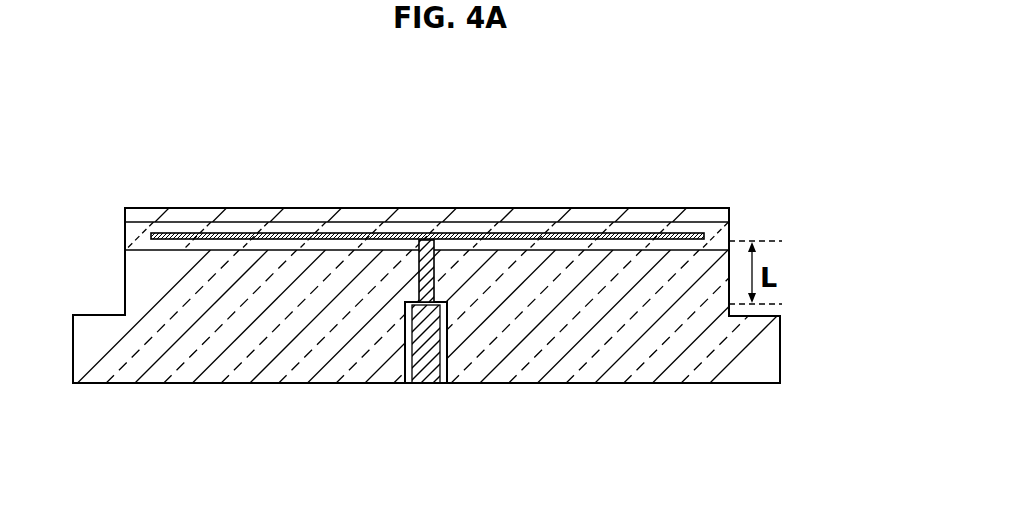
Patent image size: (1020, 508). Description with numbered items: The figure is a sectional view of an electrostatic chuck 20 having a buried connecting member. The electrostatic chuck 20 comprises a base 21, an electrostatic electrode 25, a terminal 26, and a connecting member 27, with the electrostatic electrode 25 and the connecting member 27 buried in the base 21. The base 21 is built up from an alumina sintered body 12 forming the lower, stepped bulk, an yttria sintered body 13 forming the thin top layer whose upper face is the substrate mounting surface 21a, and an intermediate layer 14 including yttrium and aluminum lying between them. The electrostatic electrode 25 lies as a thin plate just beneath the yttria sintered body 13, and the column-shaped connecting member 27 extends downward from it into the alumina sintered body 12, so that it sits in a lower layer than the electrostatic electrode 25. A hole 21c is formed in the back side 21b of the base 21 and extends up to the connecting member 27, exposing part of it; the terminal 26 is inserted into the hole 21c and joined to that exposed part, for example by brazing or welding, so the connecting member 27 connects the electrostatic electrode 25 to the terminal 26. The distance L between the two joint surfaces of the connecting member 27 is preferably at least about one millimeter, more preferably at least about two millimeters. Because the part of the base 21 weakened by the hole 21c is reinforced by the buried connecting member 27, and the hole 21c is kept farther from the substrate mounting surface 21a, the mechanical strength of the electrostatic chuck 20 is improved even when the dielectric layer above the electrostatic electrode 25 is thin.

The alumina sintered body 12 is at (760, 345).
The yttria sintered body 13 is at (729, 213).
The intermediate layer 14 is at (486, 234).
The electrostatic chuck 20 is at (483, 269).
The base 21 is at (483, 285).
The substrate mounting surface 21a is at (530, 206).
The back side 21b is at (628, 388).
The hole 21c is at (442, 385).
The electrostatic electrode 25 is at (358, 233).
The terminal 26 is at (413, 385).
The connecting member 27 is at (427, 240).